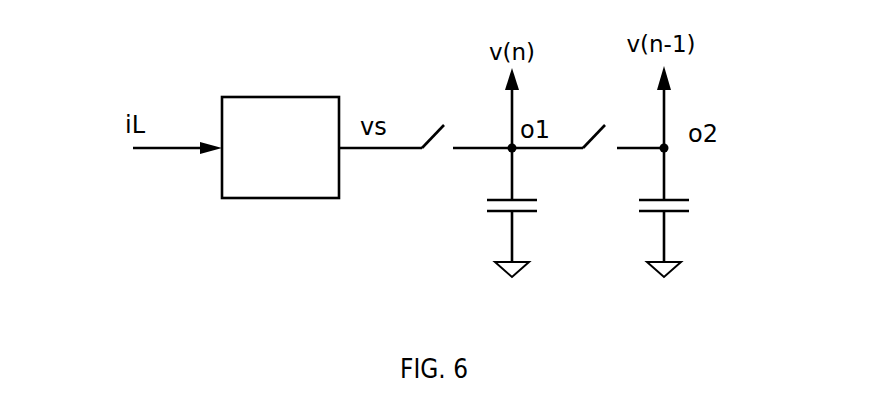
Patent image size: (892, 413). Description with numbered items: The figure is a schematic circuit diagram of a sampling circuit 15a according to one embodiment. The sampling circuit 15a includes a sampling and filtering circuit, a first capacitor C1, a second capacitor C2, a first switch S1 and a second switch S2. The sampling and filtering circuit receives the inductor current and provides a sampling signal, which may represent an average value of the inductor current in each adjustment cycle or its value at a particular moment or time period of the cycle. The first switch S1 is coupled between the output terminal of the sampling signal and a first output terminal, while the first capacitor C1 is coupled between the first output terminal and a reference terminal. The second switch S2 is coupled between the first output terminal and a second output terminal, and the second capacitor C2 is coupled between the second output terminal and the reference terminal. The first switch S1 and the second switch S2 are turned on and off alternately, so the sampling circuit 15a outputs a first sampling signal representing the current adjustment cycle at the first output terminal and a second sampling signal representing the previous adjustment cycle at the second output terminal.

The sampling circuit 15a is at (300, 258).
The first switch S1 is at (467, 155).
The second switch S2 is at (588, 155).
The first capacitor C1 is at (531, 212).
The second capacitor C2 is at (685, 212).